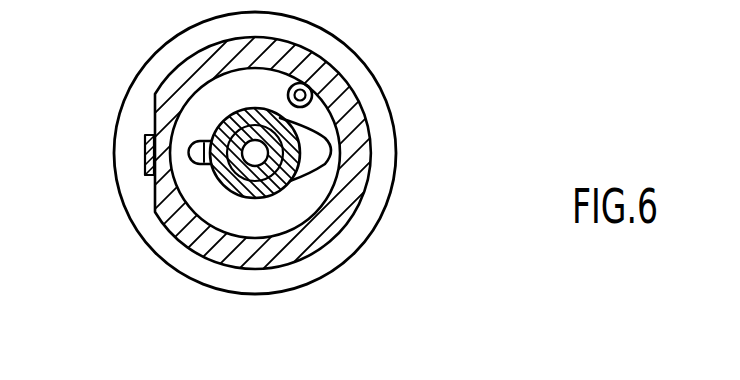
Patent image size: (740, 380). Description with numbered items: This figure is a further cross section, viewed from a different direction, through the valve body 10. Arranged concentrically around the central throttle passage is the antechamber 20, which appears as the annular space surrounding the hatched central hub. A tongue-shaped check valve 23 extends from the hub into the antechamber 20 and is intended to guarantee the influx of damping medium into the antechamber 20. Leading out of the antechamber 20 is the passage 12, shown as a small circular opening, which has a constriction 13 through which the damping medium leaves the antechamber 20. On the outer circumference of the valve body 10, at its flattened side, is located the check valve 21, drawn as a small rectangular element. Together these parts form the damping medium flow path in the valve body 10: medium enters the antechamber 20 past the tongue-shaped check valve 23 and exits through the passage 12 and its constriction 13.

The valve body 10 is at (398, 239).
The passage 12 is at (392, 87).
The constriction 13 is at (312, 93).
The antechamber 20 is at (193, 190).
The check valve 21 is at (145, 162).
The tongue-shaped check valve 23 is at (322, 157).